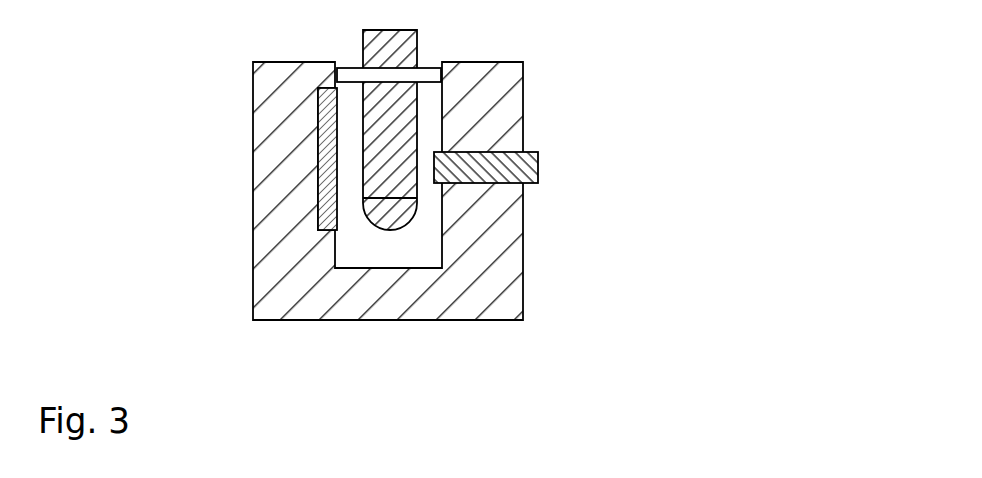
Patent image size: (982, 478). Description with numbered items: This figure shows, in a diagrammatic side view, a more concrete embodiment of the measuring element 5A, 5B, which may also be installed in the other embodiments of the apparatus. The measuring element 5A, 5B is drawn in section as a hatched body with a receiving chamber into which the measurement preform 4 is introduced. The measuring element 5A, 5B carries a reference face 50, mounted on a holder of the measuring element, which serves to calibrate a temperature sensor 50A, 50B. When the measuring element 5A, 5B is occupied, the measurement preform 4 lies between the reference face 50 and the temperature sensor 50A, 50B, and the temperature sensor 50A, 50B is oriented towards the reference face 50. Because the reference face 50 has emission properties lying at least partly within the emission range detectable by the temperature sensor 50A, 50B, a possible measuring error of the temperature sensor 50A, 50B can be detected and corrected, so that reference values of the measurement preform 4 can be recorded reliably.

The measuring element 5A is at (443, 191).
The measuring element 5B is at (497, 92).
The reference face 50 is at (320, 162).
The temperature sensor 50A is at (545, 163).
The temperature sensor 50B is at (500, 167).
The measurement preform 4 is at (392, 192).